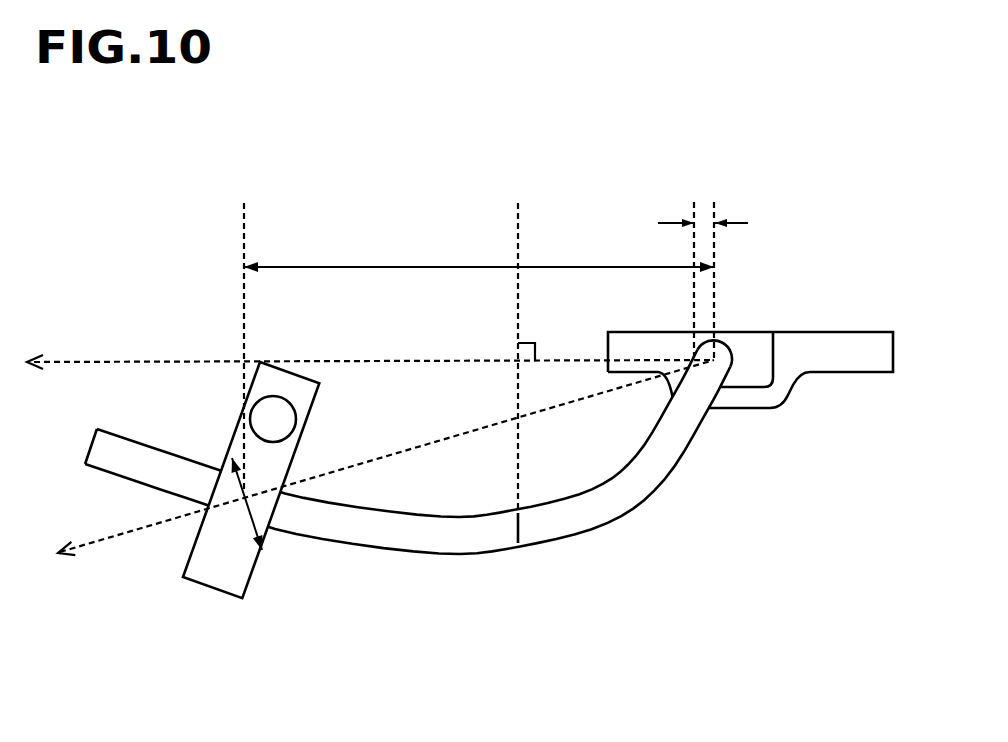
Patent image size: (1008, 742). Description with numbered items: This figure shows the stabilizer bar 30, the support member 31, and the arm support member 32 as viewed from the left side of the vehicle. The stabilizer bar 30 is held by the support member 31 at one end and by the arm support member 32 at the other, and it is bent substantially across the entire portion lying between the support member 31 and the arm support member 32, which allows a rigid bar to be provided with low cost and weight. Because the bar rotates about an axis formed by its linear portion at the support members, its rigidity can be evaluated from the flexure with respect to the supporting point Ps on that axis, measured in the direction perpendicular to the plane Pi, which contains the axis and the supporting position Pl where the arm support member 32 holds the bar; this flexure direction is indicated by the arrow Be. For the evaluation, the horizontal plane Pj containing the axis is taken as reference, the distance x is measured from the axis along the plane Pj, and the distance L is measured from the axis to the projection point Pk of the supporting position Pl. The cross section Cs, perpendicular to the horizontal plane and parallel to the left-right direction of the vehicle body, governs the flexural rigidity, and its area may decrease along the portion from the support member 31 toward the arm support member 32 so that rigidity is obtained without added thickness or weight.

The stabilizer bar 30 is at (682, 460).
The support member 31 is at (882, 392).
The arm support member 32 is at (212, 600).
The plane Pj is at (107, 360).
The projection point Pk is at (238, 357).
The supporting position Pl is at (218, 473).
The plane Pi is at (355, 464).
The supporting point Ps is at (714, 358).
The arrow Be is at (273, 527).
The cross section Cs is at (513, 532).
The distance L is at (479, 242).
The distance x is at (36, 314).